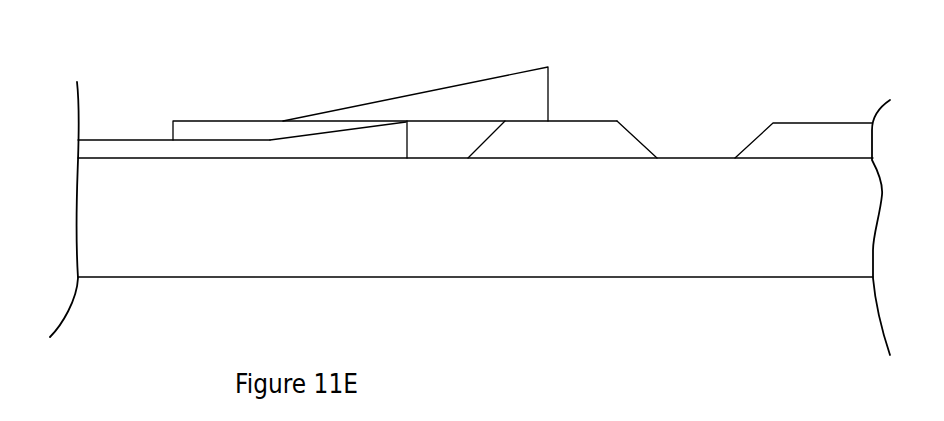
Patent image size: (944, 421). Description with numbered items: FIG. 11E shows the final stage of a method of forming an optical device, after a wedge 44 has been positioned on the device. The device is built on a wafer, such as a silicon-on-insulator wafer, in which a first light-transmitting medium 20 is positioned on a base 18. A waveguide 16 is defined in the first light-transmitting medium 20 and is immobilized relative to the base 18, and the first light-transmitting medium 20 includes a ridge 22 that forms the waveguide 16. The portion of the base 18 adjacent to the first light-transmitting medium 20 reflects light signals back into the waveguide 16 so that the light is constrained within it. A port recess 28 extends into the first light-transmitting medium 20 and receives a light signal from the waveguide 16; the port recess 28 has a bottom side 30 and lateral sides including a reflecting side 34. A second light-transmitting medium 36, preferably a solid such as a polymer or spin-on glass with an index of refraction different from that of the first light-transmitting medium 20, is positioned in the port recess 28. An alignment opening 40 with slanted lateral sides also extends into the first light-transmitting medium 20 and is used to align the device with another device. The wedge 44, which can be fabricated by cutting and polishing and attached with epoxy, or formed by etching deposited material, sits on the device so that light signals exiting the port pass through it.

The waveguide 16 is at (63, 148).
The base 18 is at (58, 158).
The first light-transmitting medium 20 is at (258, 148).
The ridge 22 is at (98, 140).
The port recess 28 is at (504, 145).
The bottom side 30 is at (457, 158).
The reflecting side 34 is at (477, 147).
The second light-transmitting medium 36 is at (232, 132).
The alignment opening 40 is at (633, 132).
The wedge 44 is at (433, 76).